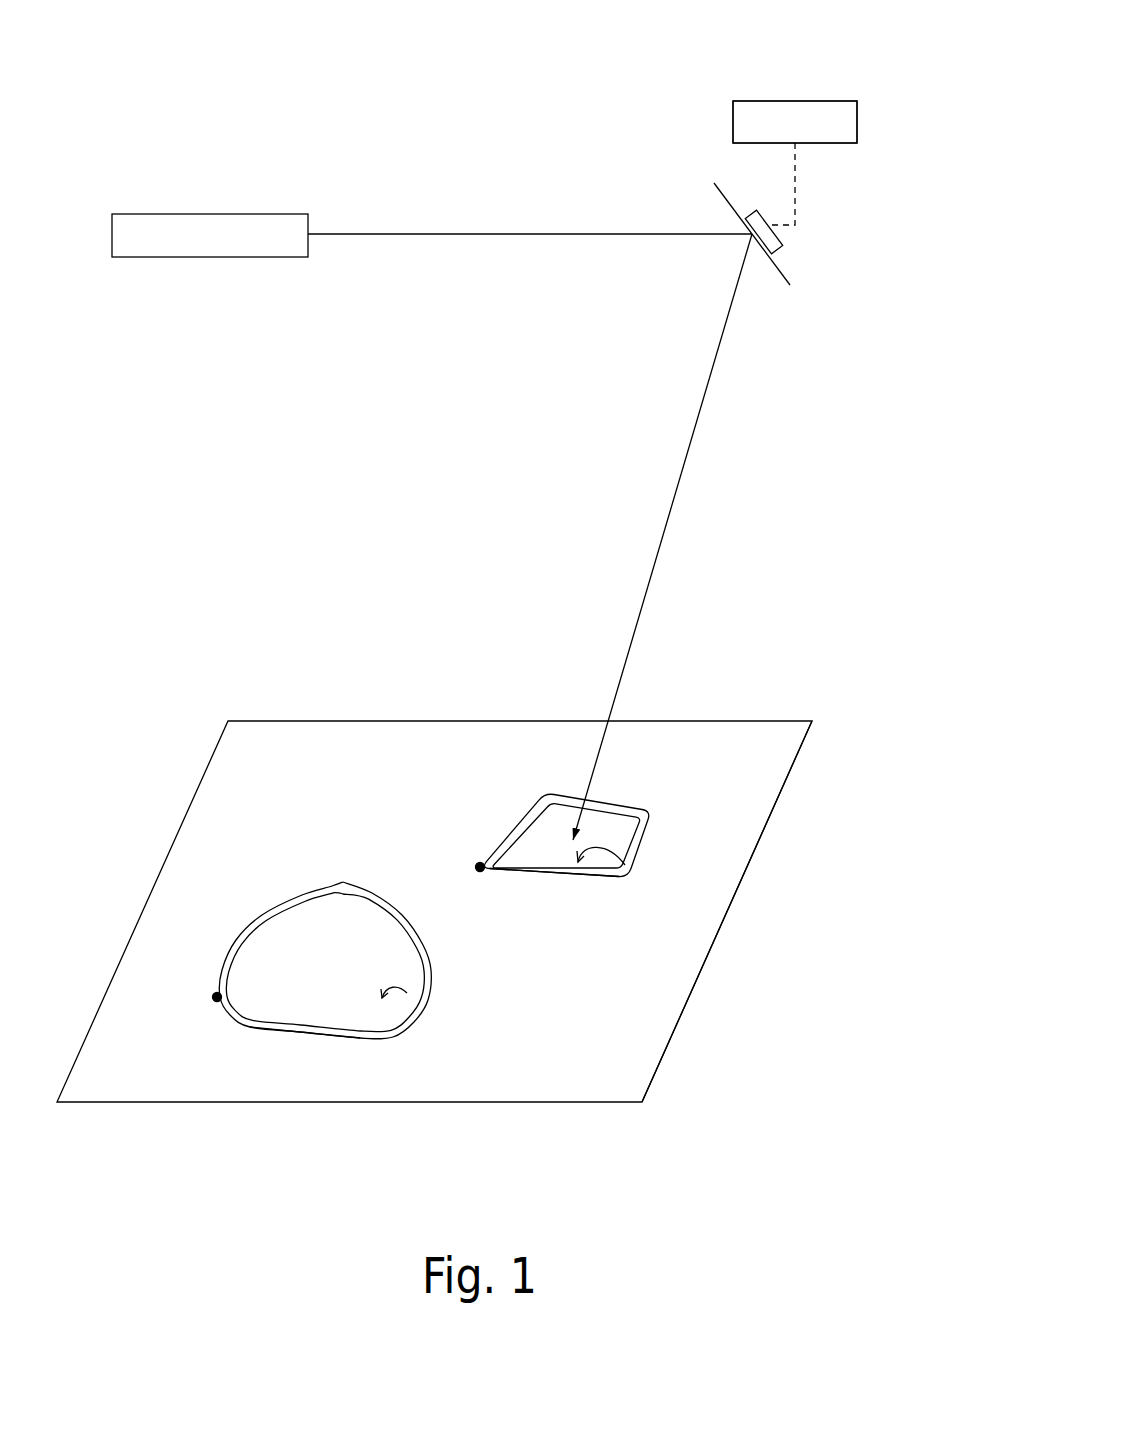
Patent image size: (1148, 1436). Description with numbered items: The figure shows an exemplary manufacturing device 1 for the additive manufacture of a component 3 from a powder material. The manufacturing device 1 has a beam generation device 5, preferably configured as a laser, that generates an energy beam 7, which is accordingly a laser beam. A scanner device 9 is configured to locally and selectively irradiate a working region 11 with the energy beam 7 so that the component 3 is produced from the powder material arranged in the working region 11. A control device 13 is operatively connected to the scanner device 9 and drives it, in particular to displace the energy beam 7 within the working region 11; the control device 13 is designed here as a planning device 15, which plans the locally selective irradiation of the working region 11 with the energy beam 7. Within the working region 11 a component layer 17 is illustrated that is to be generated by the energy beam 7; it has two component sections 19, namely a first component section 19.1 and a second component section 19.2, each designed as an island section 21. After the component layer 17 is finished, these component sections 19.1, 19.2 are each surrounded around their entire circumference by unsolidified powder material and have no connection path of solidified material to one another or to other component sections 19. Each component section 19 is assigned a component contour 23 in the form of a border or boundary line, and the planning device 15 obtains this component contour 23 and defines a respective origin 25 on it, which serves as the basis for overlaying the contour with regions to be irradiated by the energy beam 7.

The manufacturing device 1 is at (272, 85).
The component 3 is at (705, 798).
The beam generation device 5 is at (210, 214).
The energy beam 7 is at (705, 400).
The scanner device 9 is at (775, 255).
The working region 11 is at (732, 913).
The control device 13 is at (823, 101).
The planning device 15 is at (795, 122).
The component layer 17 is at (557, 875).
The component section 19 is at (582, 988).
The first component section 19.1 is at (715, 835).
The second component section 19.2 is at (393, 1039).
The island section 21 is at (642, 842).
The component contour 23 is at (625, 865).
The origin 25 is at (480, 867).